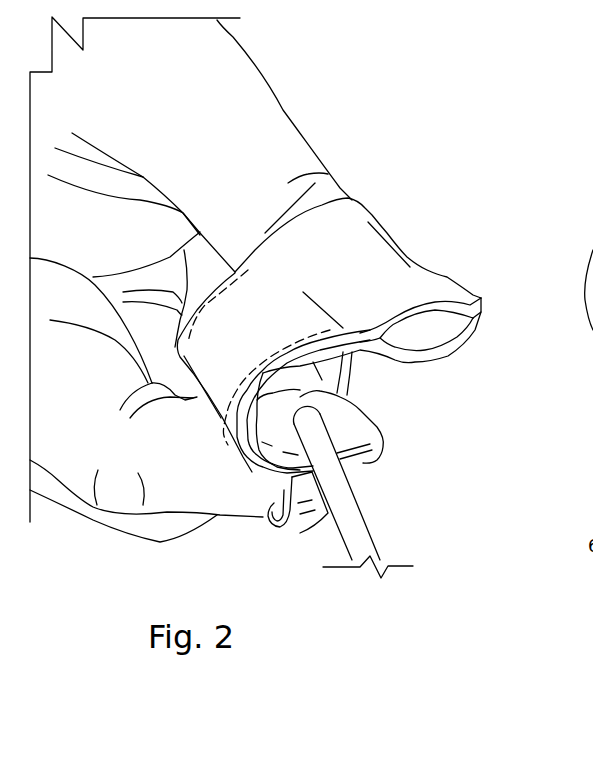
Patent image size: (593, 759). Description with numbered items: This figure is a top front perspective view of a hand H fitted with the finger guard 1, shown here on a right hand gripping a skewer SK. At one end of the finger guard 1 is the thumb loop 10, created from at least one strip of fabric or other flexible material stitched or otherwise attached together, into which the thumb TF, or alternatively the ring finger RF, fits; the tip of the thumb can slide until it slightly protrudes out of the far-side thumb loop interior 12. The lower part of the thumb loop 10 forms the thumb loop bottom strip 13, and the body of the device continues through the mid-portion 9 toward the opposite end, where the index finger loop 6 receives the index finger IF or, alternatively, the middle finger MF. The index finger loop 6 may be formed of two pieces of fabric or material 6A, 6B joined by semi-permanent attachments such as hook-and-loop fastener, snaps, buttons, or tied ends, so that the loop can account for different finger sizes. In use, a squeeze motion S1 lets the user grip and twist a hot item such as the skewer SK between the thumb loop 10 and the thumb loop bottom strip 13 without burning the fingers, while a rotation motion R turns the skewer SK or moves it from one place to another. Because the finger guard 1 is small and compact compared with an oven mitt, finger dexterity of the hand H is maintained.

The finger guard 1 is at (392, 207).
The thumb loop 10 is at (354, 277).
The mid-portion 9 is at (232, 334).
The thumb loop interior 12 is at (430, 344).
The thumb loop bottom strip 13 is at (421, 358).
The index finger loop 6 is at (316, 504).
The fabric piece of index finger loop 6A is at (278, 527).
The fabric piece of index finger loop 6B is at (268, 517).
The thumb TF is at (428, 327).
The ring finger RF is at (310, 378).
The squeeze motion S1 is at (331, 431).
The rotation motion R is at (334, 477).
The skewer SK is at (363, 537).
The hand H is at (97, 95).
The index finger IF is at (146, 483).
The middle finger MF is at (123, 518).